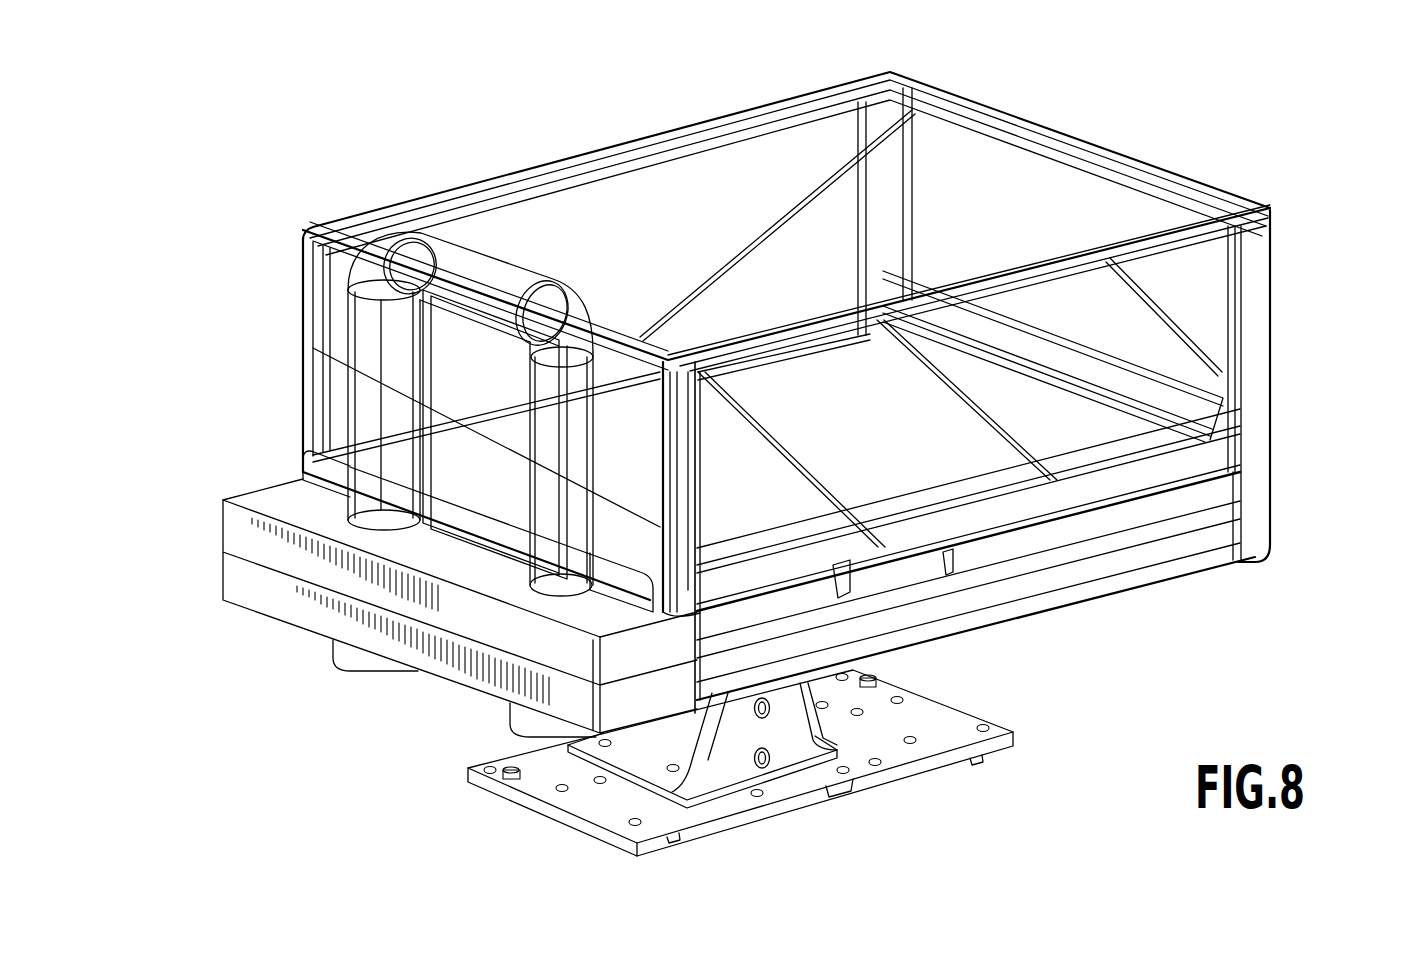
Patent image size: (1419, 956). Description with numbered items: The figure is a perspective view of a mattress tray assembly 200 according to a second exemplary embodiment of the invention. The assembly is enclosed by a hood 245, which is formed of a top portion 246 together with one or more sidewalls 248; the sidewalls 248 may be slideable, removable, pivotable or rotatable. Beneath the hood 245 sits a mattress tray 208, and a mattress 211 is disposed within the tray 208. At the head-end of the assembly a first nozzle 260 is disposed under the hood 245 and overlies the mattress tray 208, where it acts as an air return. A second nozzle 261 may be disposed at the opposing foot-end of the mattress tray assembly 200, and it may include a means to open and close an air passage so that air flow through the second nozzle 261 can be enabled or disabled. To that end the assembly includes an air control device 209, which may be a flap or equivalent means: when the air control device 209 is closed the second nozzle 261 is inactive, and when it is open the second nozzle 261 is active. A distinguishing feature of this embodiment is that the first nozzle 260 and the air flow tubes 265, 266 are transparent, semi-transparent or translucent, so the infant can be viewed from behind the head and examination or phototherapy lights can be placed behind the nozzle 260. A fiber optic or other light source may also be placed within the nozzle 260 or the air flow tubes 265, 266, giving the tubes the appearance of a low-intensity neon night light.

The mattress tray assembly 200 is at (258, 140).
The mattress tray 208 is at (923, 517).
The air control device 209 is at (1143, 368).
The mattress 211 is at (857, 442).
The hood 245 is at (965, 175).
The top portion 246 is at (742, 110).
The sidewall 248 is at (1188, 288).
The first nozzle 260 is at (470, 416).
The second nozzle 261 is at (1022, 352).
The air flow tube 265 is at (373, 355).
The air flow tube 266 is at (535, 483).